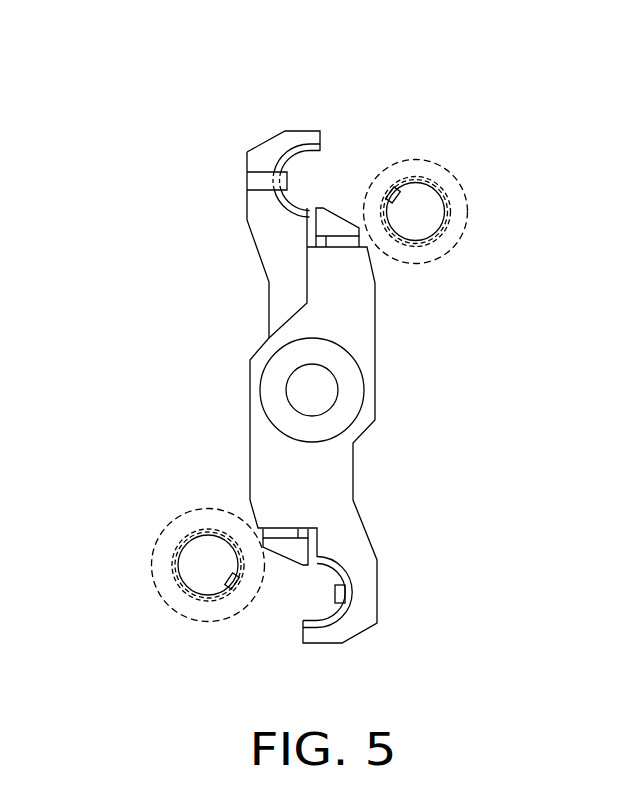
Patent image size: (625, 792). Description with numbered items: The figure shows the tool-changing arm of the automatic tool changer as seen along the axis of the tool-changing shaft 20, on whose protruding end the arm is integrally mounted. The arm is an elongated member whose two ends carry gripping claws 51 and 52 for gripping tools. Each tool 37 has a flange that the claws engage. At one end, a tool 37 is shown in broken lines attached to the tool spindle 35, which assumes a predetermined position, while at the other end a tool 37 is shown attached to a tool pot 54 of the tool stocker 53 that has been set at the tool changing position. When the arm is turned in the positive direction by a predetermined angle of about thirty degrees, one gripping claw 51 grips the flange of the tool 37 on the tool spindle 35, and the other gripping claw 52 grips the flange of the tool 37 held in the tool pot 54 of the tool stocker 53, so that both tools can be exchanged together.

The tool-changing shaft 20 is at (307, 392).
The tool spindle 35 is at (163, 572).
The tool 37 is at (443, 237).
The gripping claw 51 is at (350, 627).
The gripping claw 52 is at (273, 150).
The tool stocker 53 is at (450, 158).
The tool pot 54 is at (465, 198).